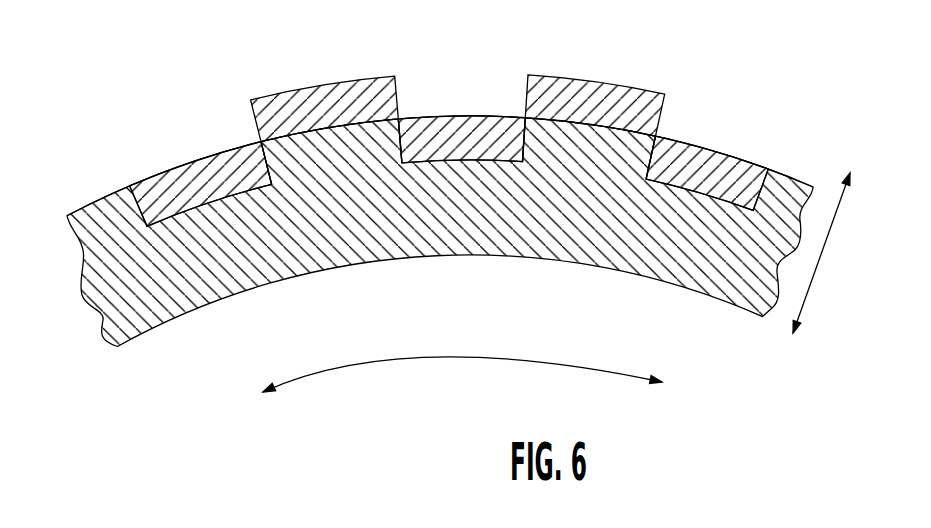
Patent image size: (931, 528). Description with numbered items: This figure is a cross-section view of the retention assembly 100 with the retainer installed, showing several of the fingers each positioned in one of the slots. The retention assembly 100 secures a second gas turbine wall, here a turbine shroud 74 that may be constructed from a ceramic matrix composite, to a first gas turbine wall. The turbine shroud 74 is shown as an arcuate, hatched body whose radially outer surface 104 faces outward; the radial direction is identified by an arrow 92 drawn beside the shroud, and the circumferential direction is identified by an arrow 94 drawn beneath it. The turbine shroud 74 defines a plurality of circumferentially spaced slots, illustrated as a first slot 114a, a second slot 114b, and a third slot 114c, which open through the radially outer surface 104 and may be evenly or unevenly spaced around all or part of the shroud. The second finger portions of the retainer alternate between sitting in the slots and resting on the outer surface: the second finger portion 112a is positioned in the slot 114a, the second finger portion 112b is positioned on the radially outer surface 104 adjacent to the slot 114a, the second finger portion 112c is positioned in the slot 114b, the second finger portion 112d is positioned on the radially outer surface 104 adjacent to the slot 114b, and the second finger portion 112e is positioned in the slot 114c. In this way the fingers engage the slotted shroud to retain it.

The retention assembly 100 is at (447, 208).
The turbine shroud 74 is at (504, 272).
The radially outer surface 104 is at (791, 172).
The arrow (radial direction) 92 is at (827, 250).
The arrow (circumferential direction) 94 is at (423, 358).
The second finger portion 112a is at (182, 163).
The second finger portion 112b is at (305, 85).
The second finger portion 112c is at (440, 117).
The second finger portion 112d is at (573, 78).
The second finger portion 112e is at (705, 147).
The first slot 114a is at (207, 200).
The second slot 114b is at (450, 164).
The third slot 114c is at (697, 192).